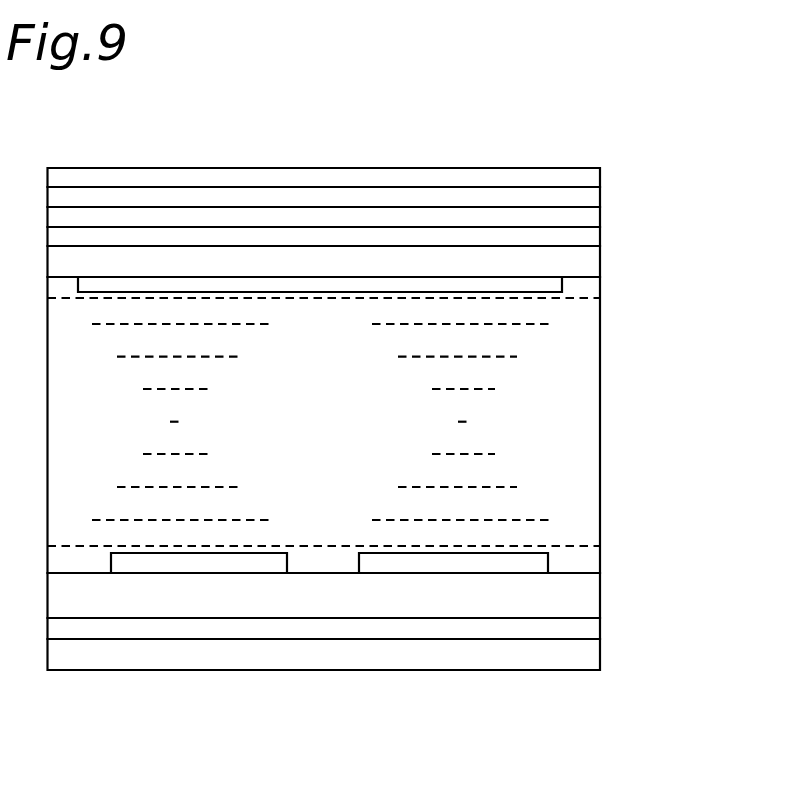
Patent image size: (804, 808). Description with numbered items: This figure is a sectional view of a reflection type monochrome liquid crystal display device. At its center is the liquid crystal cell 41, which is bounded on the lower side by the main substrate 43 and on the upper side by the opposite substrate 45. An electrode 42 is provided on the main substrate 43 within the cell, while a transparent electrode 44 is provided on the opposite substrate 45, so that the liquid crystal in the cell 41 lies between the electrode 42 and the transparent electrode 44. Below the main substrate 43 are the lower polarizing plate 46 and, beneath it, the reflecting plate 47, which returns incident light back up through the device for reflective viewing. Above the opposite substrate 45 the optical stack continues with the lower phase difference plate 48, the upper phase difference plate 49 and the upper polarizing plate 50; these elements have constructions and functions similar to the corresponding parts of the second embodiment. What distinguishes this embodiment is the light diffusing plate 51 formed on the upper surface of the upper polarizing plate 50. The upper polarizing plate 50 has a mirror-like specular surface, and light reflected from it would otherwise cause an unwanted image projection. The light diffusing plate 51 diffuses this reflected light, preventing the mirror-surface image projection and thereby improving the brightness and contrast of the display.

The liquid crystal cell 41 is at (600, 421).
The electrode 42 is at (276, 560).
The main substrate 43 is at (600, 583).
The transparent electrode 44 is at (548, 293).
The opposite substrate 45 is at (600, 272).
The lower polarizing plate 46 is at (600, 632).
The reflecting plate 47 is at (600, 651).
The lower phase difference plate 48 is at (600, 240).
The upper phase difference plate 49 is at (600, 219).
The upper polarizing plate 50 is at (600, 198).
The light diffusing plate 51 is at (600, 172).